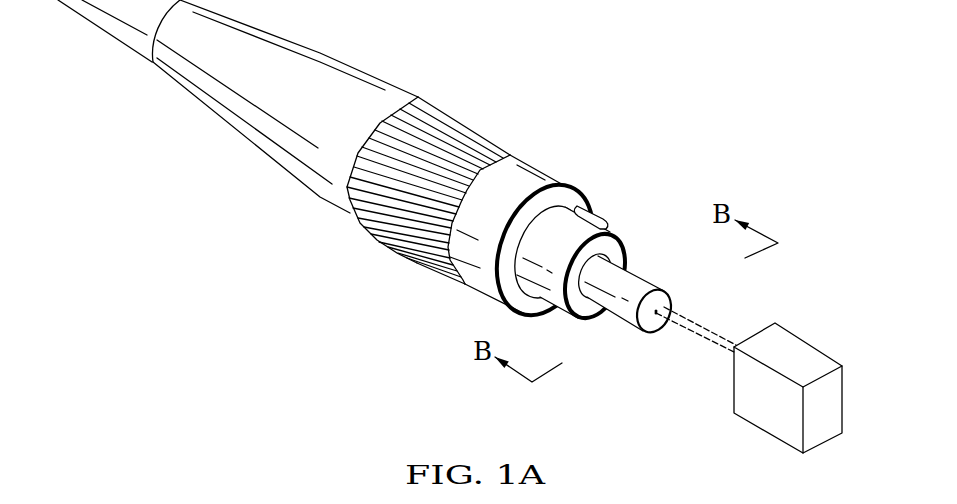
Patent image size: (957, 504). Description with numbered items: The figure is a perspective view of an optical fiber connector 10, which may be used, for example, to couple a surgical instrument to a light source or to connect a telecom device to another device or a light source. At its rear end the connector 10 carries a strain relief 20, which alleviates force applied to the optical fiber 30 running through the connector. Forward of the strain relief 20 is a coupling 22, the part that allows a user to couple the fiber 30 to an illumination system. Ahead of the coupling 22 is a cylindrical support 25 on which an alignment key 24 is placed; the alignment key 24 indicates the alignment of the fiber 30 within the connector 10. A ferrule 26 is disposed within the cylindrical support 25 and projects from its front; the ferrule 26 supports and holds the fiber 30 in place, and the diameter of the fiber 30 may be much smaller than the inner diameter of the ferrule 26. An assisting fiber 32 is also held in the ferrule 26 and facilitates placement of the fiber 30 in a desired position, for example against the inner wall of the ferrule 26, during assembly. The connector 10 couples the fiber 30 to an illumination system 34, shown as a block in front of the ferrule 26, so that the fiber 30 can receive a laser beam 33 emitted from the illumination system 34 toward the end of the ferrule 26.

The optical fiber connector 10 is at (490, 72).
The strain relief 20 is at (326, 92).
The coupling 22 is at (415, 245).
The alignment key 24 is at (598, 212).
The cylindrical support 25 is at (561, 308).
The ferrule 26 is at (645, 277).
The optical fiber 30 is at (664, 309).
The assisting fiber 32 is at (657, 330).
The laser beam 33 is at (718, 340).
The illumination system 34 is at (805, 342).